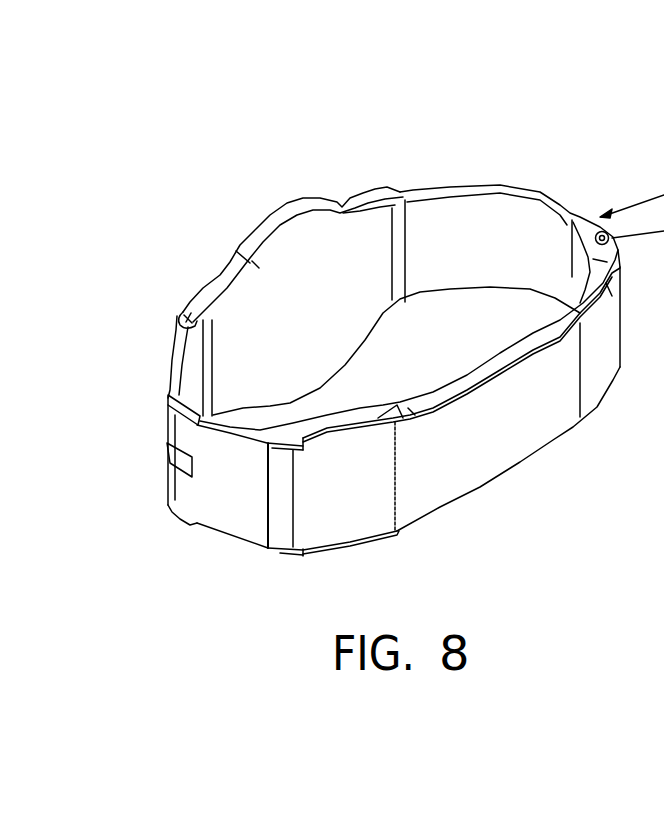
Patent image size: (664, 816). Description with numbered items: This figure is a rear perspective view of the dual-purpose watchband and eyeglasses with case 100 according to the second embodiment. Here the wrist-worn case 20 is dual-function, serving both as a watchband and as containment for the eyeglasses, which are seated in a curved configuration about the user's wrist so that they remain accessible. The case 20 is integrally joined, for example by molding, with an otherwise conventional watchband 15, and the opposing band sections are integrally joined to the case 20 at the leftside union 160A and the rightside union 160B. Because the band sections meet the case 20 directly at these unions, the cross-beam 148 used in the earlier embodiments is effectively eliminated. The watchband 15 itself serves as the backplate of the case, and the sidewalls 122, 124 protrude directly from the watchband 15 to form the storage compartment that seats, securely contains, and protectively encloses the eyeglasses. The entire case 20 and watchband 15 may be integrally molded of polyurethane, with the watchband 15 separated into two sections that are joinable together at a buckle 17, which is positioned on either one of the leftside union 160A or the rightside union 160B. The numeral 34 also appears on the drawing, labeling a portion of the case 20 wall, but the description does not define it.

The dual-purpose watchband and eyeglasses with case 100 is at (404, 194).
The cross-beam 148 is at (510, 244).
The rightside union 160B is at (396, 307).
The watchband 15 is at (412, 485).
The buckle 17 is at (152, 460).
The leftside union 160A is at (235, 476).
The front panel 34 is at (410, 398).
The sidewall 122 is at (391, 445).
The sidewall 124 is at (333, 560).
The wrist-worn case 20 is at (508, 466).